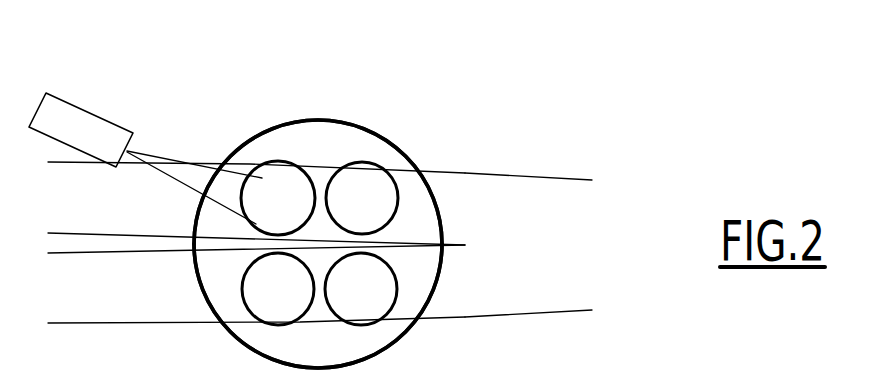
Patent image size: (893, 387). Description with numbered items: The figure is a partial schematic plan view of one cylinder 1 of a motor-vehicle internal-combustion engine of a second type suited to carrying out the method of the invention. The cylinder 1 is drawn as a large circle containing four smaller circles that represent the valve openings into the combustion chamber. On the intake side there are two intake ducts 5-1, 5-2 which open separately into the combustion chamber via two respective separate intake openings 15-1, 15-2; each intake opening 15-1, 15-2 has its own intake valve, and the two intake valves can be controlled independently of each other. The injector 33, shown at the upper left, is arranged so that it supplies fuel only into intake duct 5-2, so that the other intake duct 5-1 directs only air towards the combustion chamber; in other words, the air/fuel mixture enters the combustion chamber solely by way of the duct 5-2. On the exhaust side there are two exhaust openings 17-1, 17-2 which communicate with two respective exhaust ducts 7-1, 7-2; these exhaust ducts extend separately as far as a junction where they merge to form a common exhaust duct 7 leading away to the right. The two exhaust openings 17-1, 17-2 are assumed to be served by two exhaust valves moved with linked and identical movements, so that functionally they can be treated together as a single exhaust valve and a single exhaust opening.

The cylinder 1 is at (325, 114).
The injector 33 is at (72, 118).
The intake duct 5-1 is at (125, 315).
The intake duct 5-2 is at (165, 200).
The common exhaust duct 7 is at (555, 222).
The exhaust duct 7-1 is at (413, 293).
The exhaust duct 7-2 is at (415, 206).
The intake opening 15-1 is at (298, 302).
The intake opening 15-2 is at (298, 213).
The exhaust opening 17-1 is at (380, 302).
The exhaust opening 17-2 is at (380, 213).